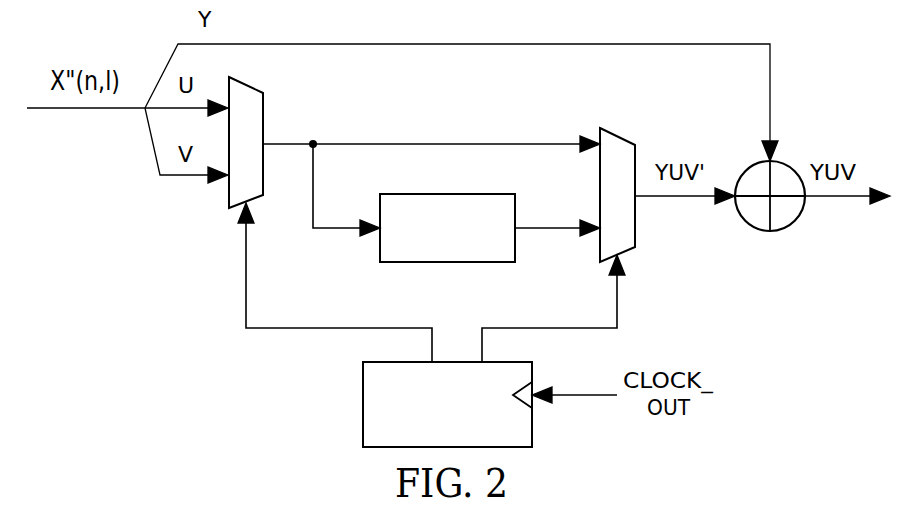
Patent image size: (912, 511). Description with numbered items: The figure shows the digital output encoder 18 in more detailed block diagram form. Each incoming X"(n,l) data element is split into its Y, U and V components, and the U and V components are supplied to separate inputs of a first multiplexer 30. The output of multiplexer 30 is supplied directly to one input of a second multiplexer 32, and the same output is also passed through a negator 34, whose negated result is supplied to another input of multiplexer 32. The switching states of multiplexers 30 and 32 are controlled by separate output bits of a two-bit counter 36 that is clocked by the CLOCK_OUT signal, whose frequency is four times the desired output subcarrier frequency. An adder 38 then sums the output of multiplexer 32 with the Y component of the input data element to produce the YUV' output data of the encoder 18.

The digital output encoder 18 is at (182, 322).
The multiplexer 30 is at (263, 93).
The multiplexer 32 is at (635, 145).
The negator 34 is at (435, 194).
The counter 36 is at (362, 395).
The adder 38 is at (768, 230).